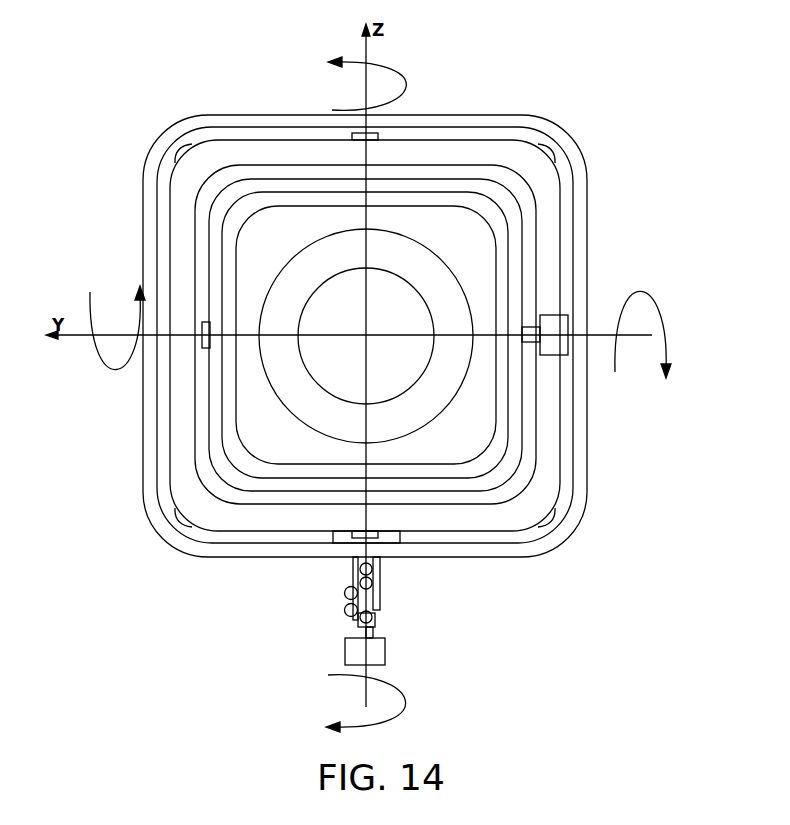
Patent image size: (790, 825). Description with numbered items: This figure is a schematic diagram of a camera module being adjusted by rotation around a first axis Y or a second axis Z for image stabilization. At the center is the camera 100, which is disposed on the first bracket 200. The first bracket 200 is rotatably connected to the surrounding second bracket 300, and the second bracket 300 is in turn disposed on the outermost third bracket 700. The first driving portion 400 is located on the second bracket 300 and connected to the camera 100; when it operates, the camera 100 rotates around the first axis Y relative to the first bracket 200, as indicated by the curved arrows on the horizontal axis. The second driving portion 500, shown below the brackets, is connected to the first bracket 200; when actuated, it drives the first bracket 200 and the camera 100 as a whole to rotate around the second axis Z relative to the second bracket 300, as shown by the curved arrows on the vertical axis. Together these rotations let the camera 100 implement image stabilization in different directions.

The camera 100 is at (478, 257).
The first bracket 200 is at (515, 265).
The second bracket 300 is at (547, 410).
The first driving portion 400 is at (562, 324).
The second driving portion 500 is at (380, 653).
The third bracket 700 is at (565, 528).